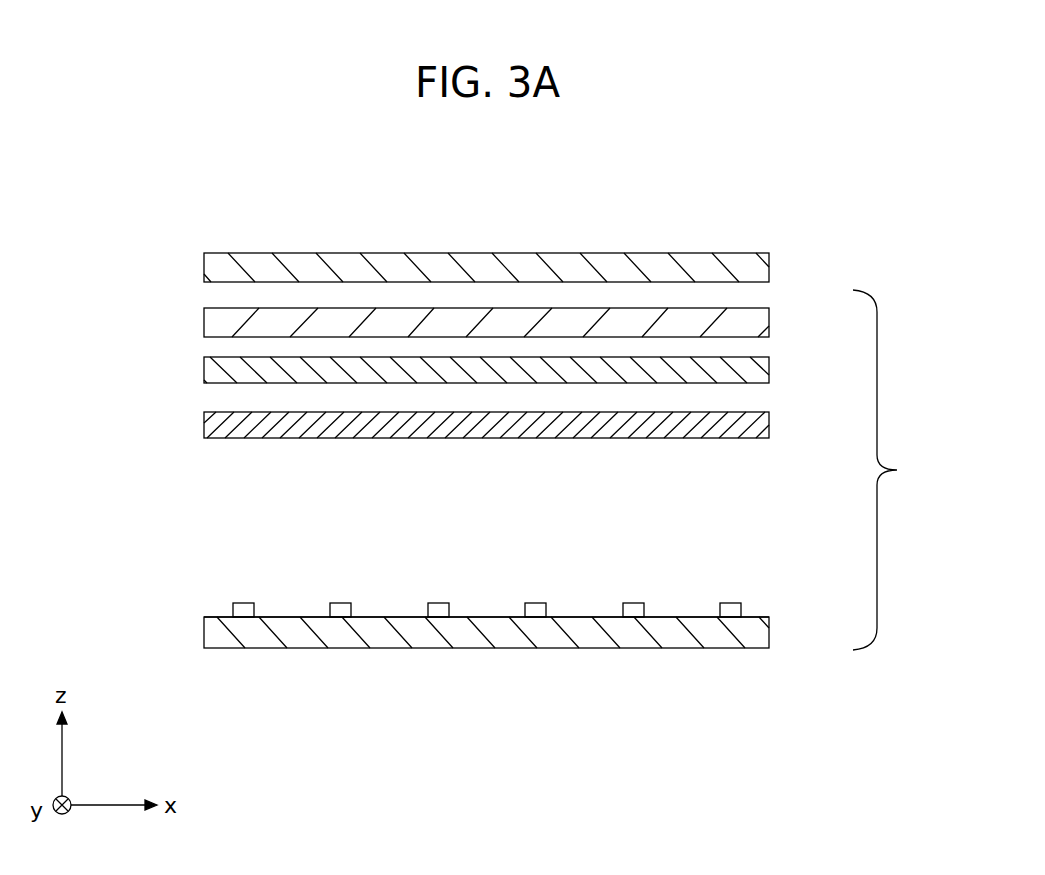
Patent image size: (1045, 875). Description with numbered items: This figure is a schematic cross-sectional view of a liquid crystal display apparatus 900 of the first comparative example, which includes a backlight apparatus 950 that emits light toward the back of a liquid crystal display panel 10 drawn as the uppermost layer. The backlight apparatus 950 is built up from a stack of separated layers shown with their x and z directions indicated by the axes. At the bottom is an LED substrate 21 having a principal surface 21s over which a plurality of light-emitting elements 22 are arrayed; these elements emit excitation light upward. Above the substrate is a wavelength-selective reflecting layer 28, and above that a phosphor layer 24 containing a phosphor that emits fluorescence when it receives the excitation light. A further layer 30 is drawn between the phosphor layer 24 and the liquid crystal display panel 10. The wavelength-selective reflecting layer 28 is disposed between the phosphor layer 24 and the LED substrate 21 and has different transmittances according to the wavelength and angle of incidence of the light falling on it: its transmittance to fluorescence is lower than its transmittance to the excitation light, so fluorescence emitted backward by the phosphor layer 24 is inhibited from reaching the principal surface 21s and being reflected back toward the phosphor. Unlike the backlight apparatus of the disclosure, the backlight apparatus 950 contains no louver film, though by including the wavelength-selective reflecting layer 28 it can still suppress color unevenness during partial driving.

The liquid crystal display apparatus 900 is at (863, 185).
The liquid crystal display panel 10 is at (731, 268).
The light control layer 30 is at (728, 325).
The phosphor layer 24 is at (728, 372).
The wavelength-selective reflecting layer 28 is at (728, 430).
The LED substrate 21 is at (761, 634).
The principal surface 21s is at (291, 616).
The light-emitting elements 22 is at (733, 608).
The backlight apparatus 950 is at (905, 470).